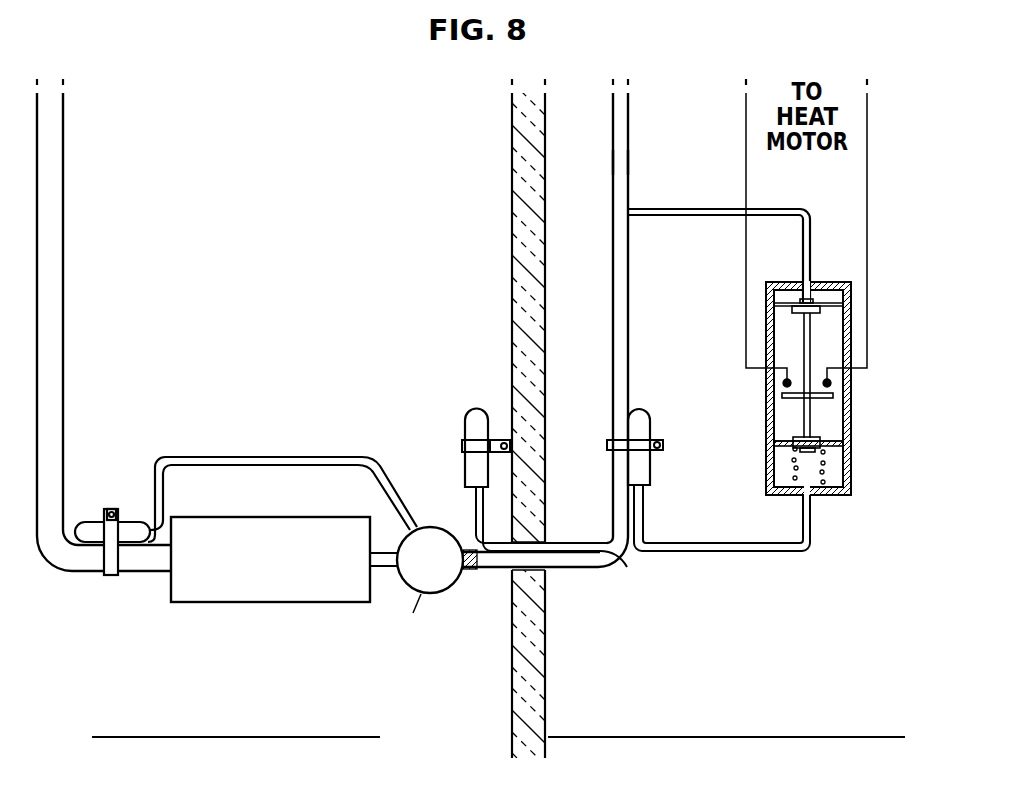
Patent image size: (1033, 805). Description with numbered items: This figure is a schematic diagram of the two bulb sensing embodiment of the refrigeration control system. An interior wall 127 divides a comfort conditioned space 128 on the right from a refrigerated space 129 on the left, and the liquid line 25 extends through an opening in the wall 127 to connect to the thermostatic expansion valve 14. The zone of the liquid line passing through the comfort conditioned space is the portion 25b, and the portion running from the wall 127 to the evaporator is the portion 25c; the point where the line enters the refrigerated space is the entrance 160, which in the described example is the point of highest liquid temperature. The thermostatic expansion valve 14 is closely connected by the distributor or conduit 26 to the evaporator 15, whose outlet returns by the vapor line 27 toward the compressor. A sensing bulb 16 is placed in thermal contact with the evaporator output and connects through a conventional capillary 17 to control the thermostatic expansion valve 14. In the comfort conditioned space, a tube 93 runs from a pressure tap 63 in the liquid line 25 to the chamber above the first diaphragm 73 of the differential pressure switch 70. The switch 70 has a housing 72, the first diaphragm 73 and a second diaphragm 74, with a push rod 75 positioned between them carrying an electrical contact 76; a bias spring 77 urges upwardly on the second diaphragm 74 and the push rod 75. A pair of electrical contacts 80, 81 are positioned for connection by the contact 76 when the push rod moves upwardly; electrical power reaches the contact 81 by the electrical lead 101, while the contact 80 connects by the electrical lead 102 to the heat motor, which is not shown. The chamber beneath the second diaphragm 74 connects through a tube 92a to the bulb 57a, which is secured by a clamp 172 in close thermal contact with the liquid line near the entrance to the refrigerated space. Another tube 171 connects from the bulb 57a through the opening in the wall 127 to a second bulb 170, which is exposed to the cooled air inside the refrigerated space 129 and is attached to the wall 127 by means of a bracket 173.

The thermostatic expansion valve 14 is at (411, 580).
The evaporator 15 is at (210, 604).
The sensing bulb 16 is at (96, 522).
The capillary 17 is at (268, 455).
The liquid line 25 is at (629, 162).
The liquid line portion in comfort conditioned space 25b is at (612, 278).
The liquid line portion to evaporator 25c is at (480, 568).
The distributor or conduit 26 is at (382, 550).
The vapor line 27 is at (62, 260).
The bulb 57a is at (640, 420).
The pressure tap 63 is at (630, 207).
The differential pressure switch 70 is at (852, 355).
The housing 72 is at (848, 437).
The first diaphragm 73 is at (827, 300).
The second diaphragm 74 is at (836, 440).
The push rod 75 is at (802, 420).
The electrical contact 76 is at (782, 398).
The bias spring 77 is at (793, 468).
The electrical contact 80 is at (784, 385).
The electrical contact 81 is at (830, 385).
The tube 92a is at (730, 552).
The tube 93 is at (770, 212).
The electrical lead 101 is at (868, 135).
The electrical lead 102 is at (745, 125).
The wall 127 is at (512, 275).
The comfort conditioned space 128 is at (680, 700).
The refrigerated space 129 is at (238, 700).
The entrance to the refrigerated space 160 is at (533, 541).
The second bulb 170 is at (464, 432).
The tube 171 is at (475, 503).
The clamp 172 is at (607, 448).
The bracket 173 is at (497, 438).